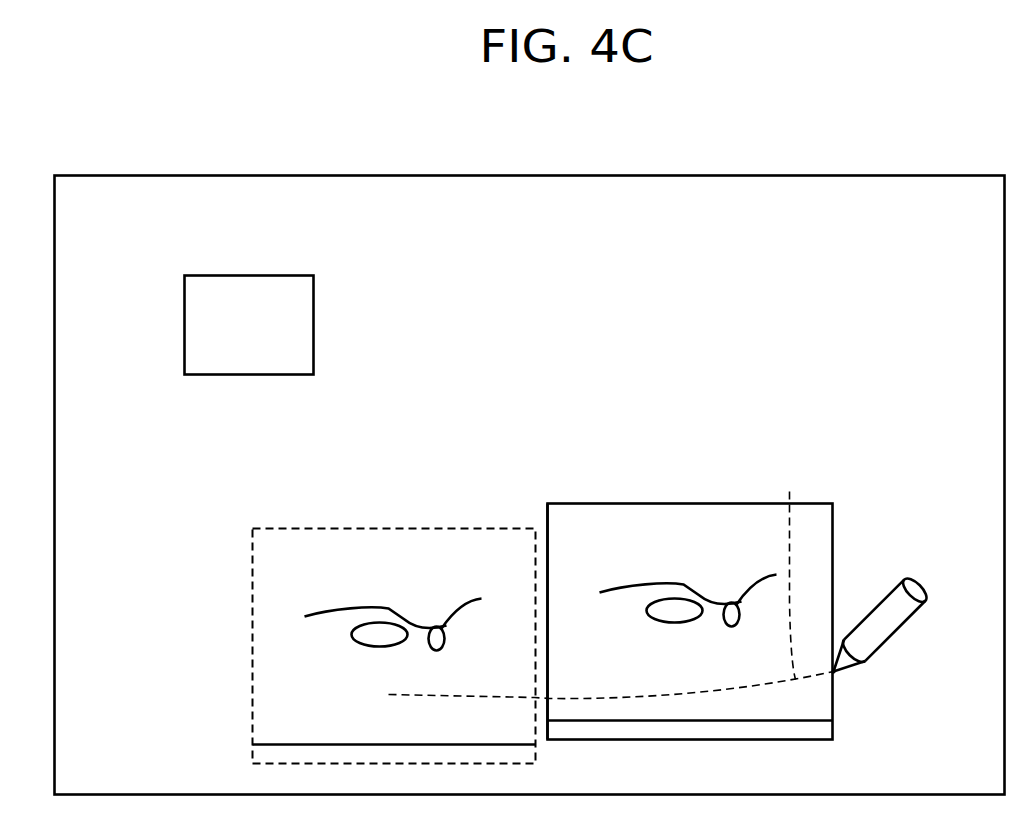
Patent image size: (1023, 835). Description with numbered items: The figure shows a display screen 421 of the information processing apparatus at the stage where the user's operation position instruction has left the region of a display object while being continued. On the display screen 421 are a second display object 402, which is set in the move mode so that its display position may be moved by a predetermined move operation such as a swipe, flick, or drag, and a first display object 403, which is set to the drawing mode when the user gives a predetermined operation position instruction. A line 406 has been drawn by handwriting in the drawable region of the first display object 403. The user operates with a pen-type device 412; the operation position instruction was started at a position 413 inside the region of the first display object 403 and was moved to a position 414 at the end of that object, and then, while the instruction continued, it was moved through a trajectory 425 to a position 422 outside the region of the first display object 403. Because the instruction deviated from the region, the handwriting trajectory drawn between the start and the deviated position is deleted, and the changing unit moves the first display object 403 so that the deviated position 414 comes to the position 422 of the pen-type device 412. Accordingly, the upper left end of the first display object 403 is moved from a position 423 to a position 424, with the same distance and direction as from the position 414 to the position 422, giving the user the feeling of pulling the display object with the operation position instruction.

The display screen 421 is at (892, 174).
The second display object 402 is at (275, 274).
The first display object 403 is at (812, 502).
The line 406 is at (637, 584).
The pen-type device 412 is at (918, 576).
The position 413 is at (387, 693).
The position 414 is at (533, 695).
The position 422 is at (835, 672).
The position 423 is at (251, 527).
The position 424 is at (547, 502).
The trajectory 425 is at (791, 571).